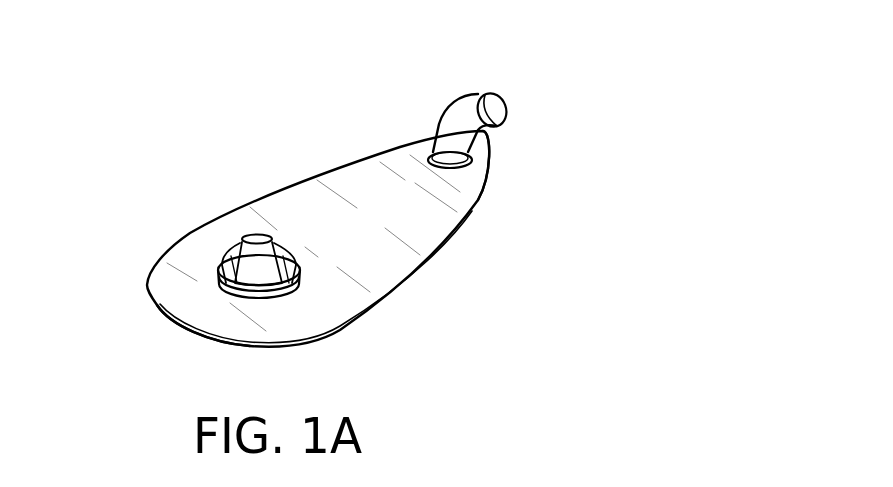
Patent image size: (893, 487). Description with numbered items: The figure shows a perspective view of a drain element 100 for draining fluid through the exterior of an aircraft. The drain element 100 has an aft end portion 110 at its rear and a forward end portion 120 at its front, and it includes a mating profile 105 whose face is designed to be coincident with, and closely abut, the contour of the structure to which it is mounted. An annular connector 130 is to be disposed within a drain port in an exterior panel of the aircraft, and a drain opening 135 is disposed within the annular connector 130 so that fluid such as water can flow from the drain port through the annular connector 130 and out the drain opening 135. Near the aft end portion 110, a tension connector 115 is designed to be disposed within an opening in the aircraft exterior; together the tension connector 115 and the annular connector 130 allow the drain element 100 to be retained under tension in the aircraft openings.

The drain element 100 is at (150, 172).
The mating profile 105 is at (375, 278).
The aft end portion 110 is at (485, 175).
The tension connector 115 is at (485, 94).
The forward end portion 120 is at (203, 340).
The annular connector 130 is at (220, 268).
The drain opening 135 is at (258, 243).